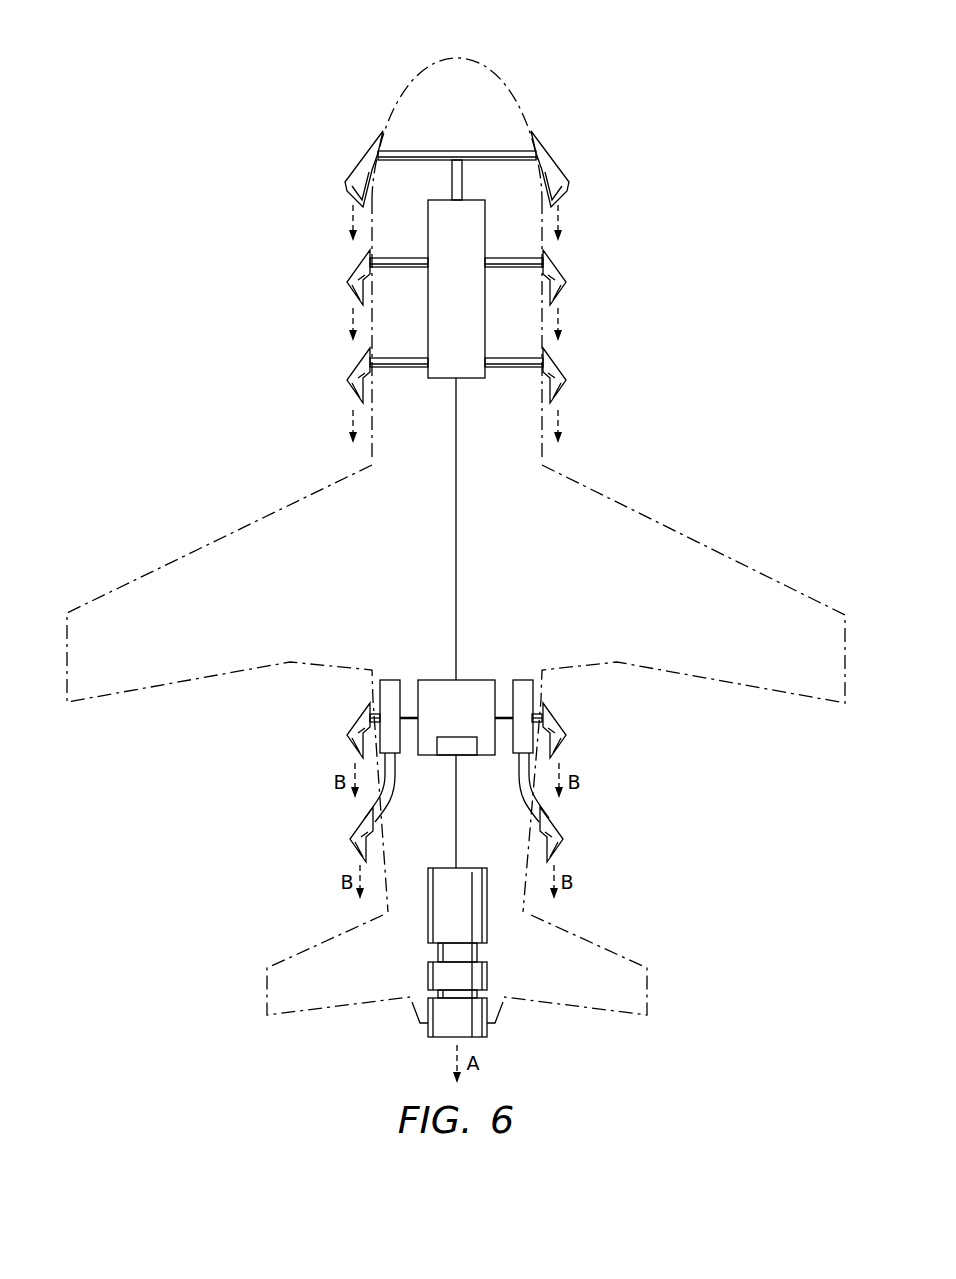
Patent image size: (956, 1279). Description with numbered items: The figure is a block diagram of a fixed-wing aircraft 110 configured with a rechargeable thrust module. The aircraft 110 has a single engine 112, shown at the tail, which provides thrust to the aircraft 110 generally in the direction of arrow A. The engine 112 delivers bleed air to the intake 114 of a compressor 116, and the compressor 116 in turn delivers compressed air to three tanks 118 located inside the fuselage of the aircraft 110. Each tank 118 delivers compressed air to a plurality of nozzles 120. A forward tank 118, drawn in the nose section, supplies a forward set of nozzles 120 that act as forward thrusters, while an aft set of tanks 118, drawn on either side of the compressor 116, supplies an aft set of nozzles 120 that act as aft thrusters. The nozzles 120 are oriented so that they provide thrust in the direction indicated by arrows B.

The aircraft 110 is at (570, 48).
The engine 112 is at (403, 954).
The intake 114 is at (455, 736).
The compressor 116 is at (476, 679).
The tank 118 is at (474, 301).
The nozzle 120 is at (456, 496).